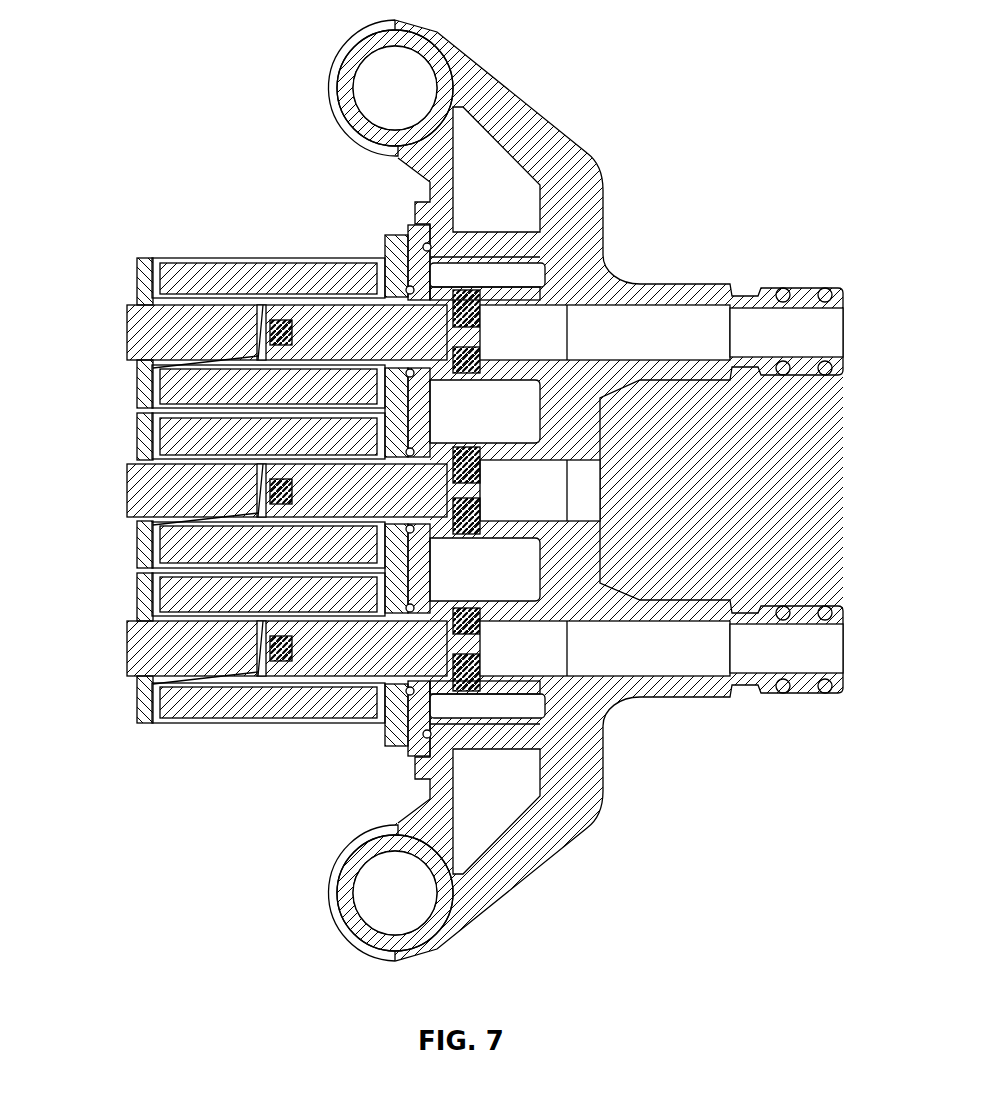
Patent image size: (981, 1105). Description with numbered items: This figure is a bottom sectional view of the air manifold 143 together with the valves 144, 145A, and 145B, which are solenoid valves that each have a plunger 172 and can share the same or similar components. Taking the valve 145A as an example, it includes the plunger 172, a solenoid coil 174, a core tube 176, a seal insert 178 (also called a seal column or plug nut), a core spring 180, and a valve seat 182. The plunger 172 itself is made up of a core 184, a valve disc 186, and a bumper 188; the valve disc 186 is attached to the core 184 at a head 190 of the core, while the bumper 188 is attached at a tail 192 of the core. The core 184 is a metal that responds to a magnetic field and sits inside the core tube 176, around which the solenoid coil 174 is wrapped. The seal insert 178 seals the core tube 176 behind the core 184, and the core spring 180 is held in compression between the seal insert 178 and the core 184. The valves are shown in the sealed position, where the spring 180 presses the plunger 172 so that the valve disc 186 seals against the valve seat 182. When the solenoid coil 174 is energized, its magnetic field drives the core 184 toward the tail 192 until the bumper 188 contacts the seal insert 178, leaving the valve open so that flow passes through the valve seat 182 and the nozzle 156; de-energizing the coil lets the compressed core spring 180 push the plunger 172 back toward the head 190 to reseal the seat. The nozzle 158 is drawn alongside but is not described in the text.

The air manifold 143 is at (633, 490).
The valve 144 is at (130, 426).
The valve 145A is at (232, 273).
The valve 145B is at (129, 576).
The nozzle 156 is at (845, 330).
The second output shaft 158 is at (845, 650).
The plunger 172 is at (261, 238).
The solenoid coil 174 is at (175, 277).
The core tube 176 is at (153, 290).
The seal insert 178 is at (244, 249).
The core spring 180 is at (262, 355).
The valve seat 182 is at (492, 300).
The core 184 is at (340, 300).
The valve disc 186 is at (477, 297).
The bumper 188 is at (276, 318).
The head 190 is at (457, 297).
The tail 192 is at (175, 365).